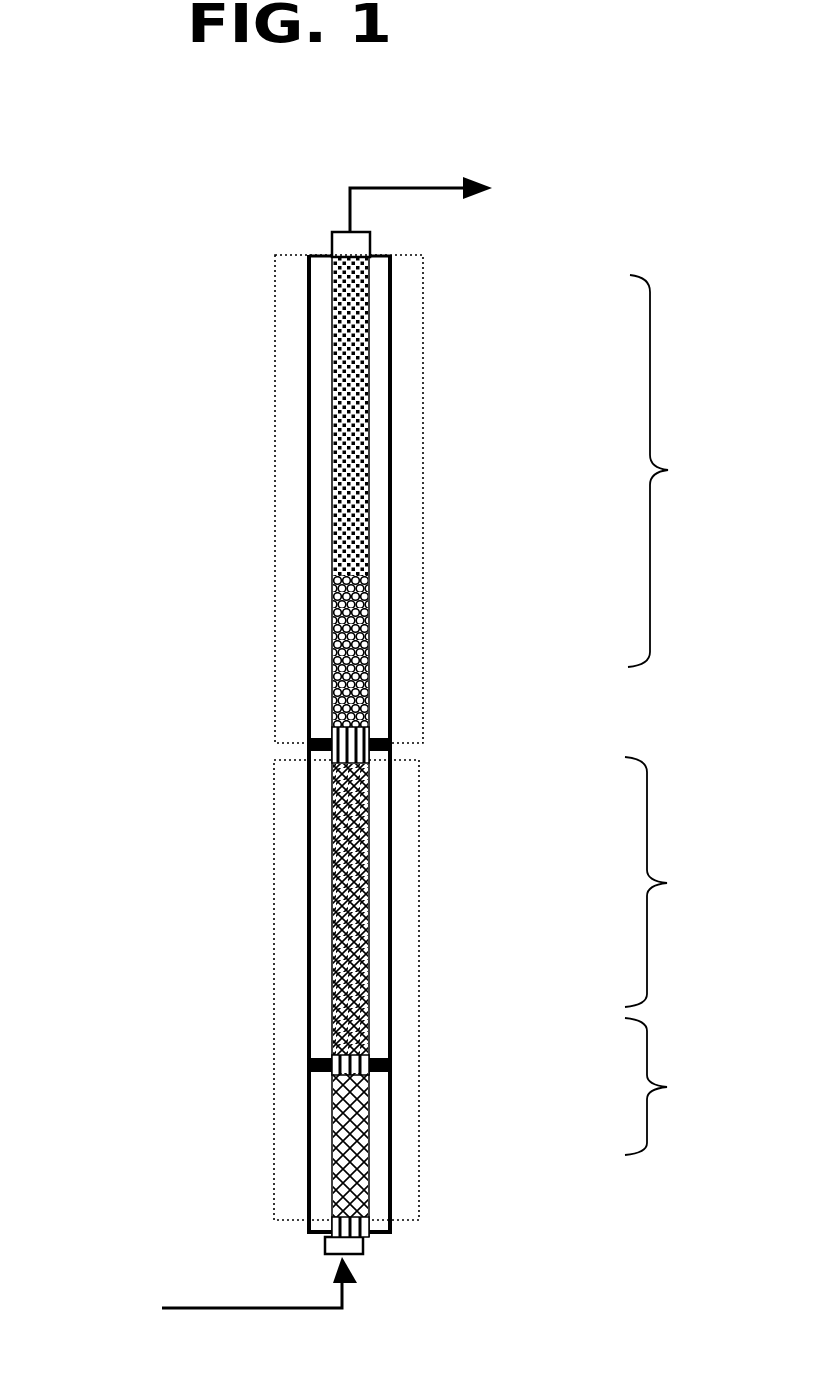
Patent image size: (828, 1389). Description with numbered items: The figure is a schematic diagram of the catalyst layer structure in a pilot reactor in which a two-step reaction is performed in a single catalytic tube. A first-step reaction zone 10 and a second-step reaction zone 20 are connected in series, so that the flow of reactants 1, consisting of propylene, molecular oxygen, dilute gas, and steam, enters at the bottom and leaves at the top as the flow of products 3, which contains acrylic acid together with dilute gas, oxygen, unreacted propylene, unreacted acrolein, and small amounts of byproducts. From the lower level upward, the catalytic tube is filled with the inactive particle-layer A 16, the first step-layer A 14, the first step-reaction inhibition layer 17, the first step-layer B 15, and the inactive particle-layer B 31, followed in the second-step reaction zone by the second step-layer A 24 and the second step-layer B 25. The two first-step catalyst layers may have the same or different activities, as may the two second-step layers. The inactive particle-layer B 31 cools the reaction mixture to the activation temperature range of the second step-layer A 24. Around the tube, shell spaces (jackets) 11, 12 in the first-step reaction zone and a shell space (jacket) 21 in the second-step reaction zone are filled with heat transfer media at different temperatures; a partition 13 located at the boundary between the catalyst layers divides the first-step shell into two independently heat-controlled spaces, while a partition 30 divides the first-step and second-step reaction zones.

The flow of reactants 1 is at (248, 1291).
The flow of products 3 is at (430, 202).
The first-step reaction zone 10 is at (329, 990).
The shell space (jacket) 11 is at (666, 1086).
The shell space (jacket) 12 is at (667, 882).
The partition 13 is at (307, 1064).
The first step-layer A 14 is at (331, 1185).
The first step-layer B 15 is at (331, 947).
The inactive particle-layer A 16 is at (368, 1219).
The first step-reaction inhibition layer 17 is at (363, 1054).
The second-step reaction zone 20 is at (330, 499).
The shell space (jacket) 21 is at (677, 471).
The second step-layer A 24 is at (330, 697).
The second step-layer B 25 is at (333, 462).
The partition 30 is at (307, 743).
The inactive particle-layer B 31 is at (363, 763).